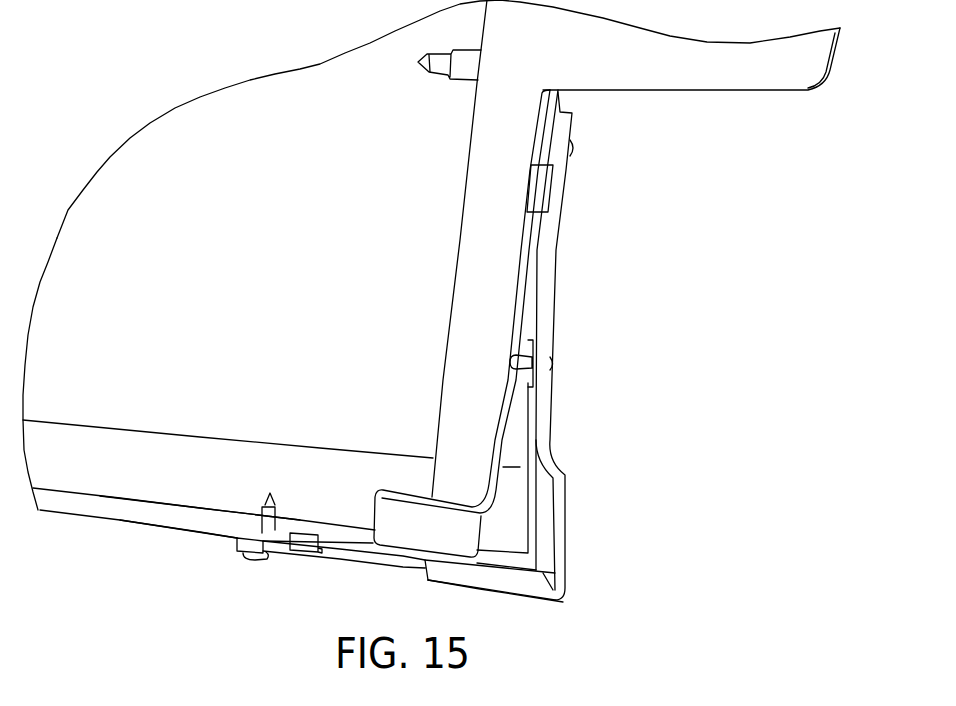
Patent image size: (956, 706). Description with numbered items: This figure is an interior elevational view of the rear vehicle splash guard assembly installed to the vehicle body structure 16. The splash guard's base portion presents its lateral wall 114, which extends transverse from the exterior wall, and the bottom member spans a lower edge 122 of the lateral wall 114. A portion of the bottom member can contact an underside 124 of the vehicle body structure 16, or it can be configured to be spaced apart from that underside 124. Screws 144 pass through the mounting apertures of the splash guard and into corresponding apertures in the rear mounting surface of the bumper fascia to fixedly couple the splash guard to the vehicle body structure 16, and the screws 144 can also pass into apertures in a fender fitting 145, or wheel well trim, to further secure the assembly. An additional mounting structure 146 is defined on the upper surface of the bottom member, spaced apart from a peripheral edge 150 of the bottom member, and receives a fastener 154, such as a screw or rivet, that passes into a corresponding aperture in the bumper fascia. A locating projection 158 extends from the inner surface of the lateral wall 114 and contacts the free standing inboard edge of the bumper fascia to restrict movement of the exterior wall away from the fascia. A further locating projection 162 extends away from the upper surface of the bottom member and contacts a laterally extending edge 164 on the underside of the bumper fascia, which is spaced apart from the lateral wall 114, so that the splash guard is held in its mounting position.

The vehicle body structure 16 is at (317, 102).
The lateral wall 114 is at (552, 432).
The lower edge of the lateral wall 122 is at (468, 594).
The underside of the vehicle body structure 124 is at (202, 536).
The screw 144 is at (577, 148).
The fender fitting 145 is at (748, 65).
The additional mounting structure 146 is at (233, 542).
The peripheral edge of the bottom member 150 is at (310, 558).
The fastener 154 is at (247, 561).
The locating projection 158 is at (538, 185).
The locating projection 162 is at (305, 540).
The laterally extending edge of the bumper fascia 164 is at (215, 527).